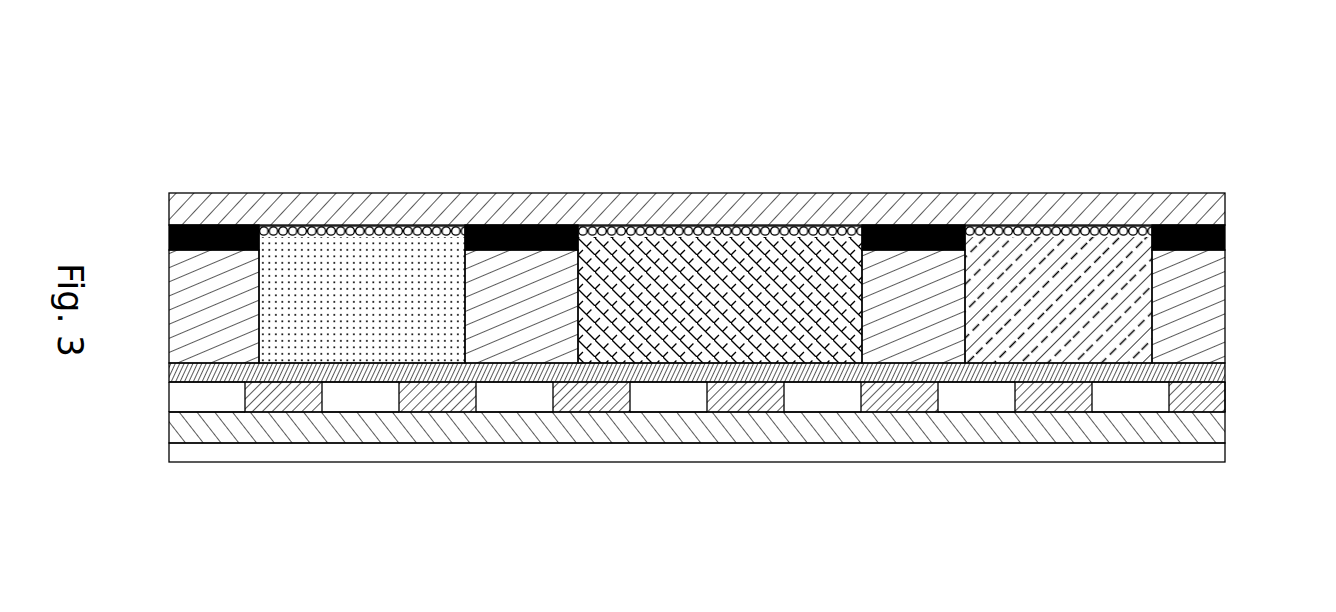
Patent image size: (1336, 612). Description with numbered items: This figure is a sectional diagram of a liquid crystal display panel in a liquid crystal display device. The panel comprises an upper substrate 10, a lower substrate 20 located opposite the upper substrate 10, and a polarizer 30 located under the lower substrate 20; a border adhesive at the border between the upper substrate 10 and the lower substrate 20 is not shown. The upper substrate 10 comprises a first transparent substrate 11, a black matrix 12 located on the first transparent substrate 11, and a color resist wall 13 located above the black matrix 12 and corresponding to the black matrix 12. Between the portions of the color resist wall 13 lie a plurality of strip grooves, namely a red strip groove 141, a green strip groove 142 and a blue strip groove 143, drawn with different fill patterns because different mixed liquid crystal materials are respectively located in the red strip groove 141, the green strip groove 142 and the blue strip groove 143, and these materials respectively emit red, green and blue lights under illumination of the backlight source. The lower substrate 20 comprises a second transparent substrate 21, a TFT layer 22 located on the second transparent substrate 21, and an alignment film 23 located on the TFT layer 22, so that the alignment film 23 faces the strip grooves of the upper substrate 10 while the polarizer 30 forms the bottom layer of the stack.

The upper substrate 10 is at (1225, 210).
The first transparent substrate 11 is at (345, 200).
The black matrix 12 is at (588, 227).
The color resist wall 13 is at (520, 333).
The red strip groove 141 is at (370, 300).
The green strip groove 142 is at (715, 300).
The blue strip groove 143 is at (1037, 290).
The lower substrate 20 is at (1225, 397).
The second transparent substrate 21 is at (743, 430).
The TFT layer 22 is at (885, 400).
The alignment film 23 is at (1115, 373).
The polarizer 30 is at (1225, 452).